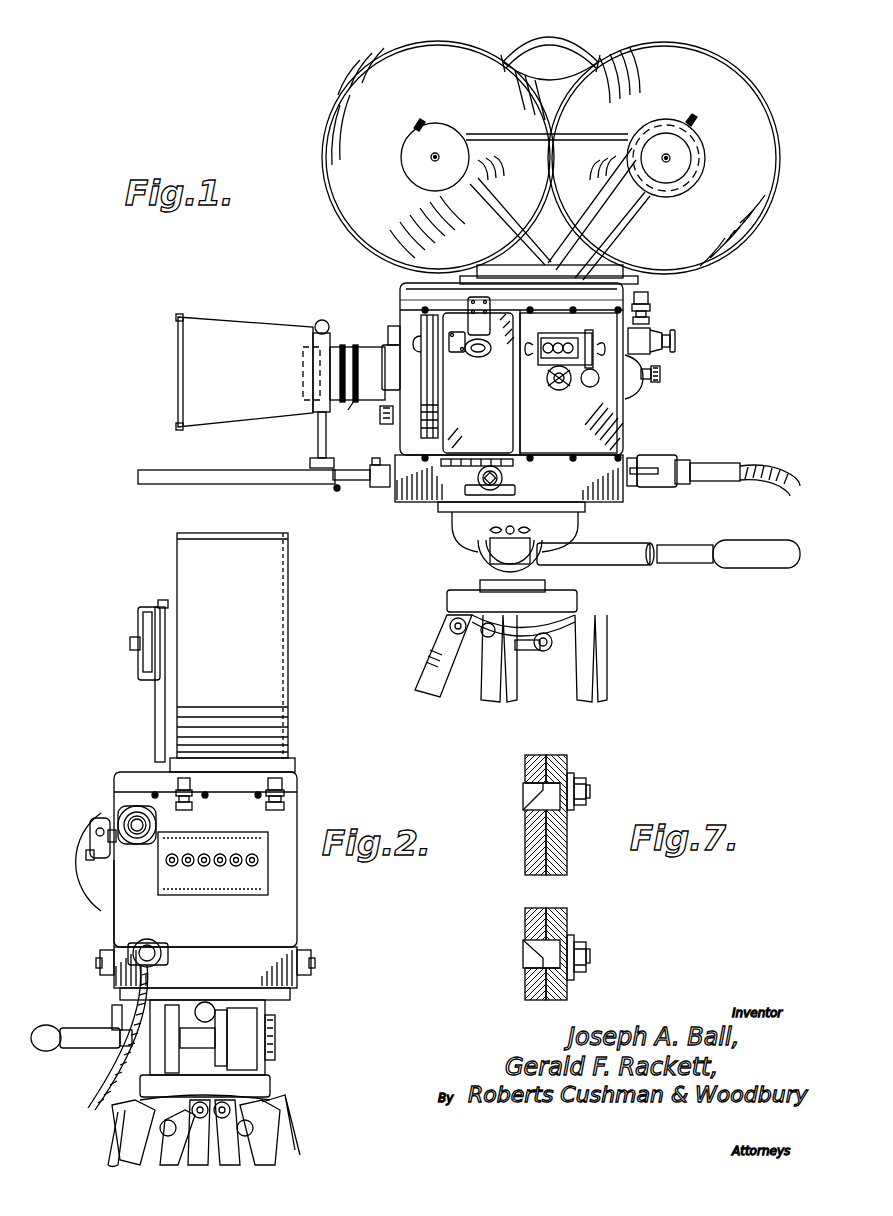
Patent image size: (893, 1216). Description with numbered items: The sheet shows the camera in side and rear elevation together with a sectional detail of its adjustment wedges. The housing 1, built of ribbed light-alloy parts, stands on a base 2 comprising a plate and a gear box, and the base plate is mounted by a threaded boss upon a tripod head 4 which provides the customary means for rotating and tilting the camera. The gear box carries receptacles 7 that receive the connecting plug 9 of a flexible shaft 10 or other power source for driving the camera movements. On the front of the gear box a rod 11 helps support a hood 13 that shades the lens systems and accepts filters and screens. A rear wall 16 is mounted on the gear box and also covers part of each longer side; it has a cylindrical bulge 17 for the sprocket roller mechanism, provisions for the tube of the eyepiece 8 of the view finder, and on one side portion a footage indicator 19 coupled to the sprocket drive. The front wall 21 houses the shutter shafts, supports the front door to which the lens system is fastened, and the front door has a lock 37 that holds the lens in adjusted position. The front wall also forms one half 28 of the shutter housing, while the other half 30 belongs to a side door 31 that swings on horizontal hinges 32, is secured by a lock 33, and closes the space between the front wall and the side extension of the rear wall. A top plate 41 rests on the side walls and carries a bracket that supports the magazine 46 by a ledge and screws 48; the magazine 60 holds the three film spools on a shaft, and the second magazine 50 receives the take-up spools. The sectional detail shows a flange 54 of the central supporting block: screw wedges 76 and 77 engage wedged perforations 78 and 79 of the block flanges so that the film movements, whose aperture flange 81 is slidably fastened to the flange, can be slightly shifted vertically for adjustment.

In FIG. 1, the housing 1 is at (518, 372).
In FIG. 2, the housing 1 is at (201, 846).
In FIG. 1, the base 2 is at (511, 492).
In FIG. 2, the base 2 is at (200, 967).
In FIG. 1, the tripod head 4 is at (475, 523).
In FIG. 2, the tripod head 4 is at (268, 992).
In FIG. 1, the receptacle 7 is at (502, 477).
In FIG. 2, the receptacle 7 is at (100, 962).
In FIG. 1, the eyepiece 8 is at (675, 345).
In FIG. 2, the eyepiece 8 is at (127, 810).
In FIG. 1, the connecting plug 9 is at (721, 468).
In FIG. 2, the connecting plug 9 is at (153, 940).
In FIG. 1, the flexible shaft 10 is at (770, 468).
In FIG. 2, the flexible shaft 10 is at (111, 1087).
In FIG. 1, the rod 11 is at (246, 472).
In FIG. 1, the hood 13 is at (214, 332).
In FIG. 1, the rear wall 16 is at (571, 382).
In FIG. 2, the rear wall 16 is at (273, 908).
In FIG. 1, the cylindrical bulge 17 is at (636, 384).
In FIG. 2, the cylindrical bulge 17 is at (194, 838).
In FIG. 1, the footage indicator 19 is at (565, 352).
In FIG. 2, the footage indicator 19 is at (92, 836).
In FIG. 1, the front wall 21 is at (400, 323).
In FIG. 1, the shutter housing half 28 is at (425, 366).
In FIG. 1, the shutter housing half 30 is at (438, 353).
In FIG. 2, the shutter housing half 30 is at (100, 893).
In FIG. 1, the side door 31 is at (478, 383).
In FIG. 1, the horizontal hinge 32 is at (470, 470).
In FIG. 1, the lock 33 is at (480, 350).
In FIG. 1, the lock 37 is at (380, 420).
In FIG. 1, the top plate 41 is at (408, 298).
In FIG. 2, the top plate 41 is at (290, 770).
In FIG. 1, the magazine 46 is at (555, 100).
In FIG. 1, the screw 48 is at (654, 318).
In FIG. 2, the screw 48 is at (285, 808).
In FIG. 1, the film magazine 50 is at (695, 67).
In FIG. 2, the film magazine 50 is at (212, 652).
In FIG. 7, the flange 54 is at (525, 840).
In FIG. 1, the magazine 60 is at (450, 63).
In FIG. 7, the screw wedge 76 is at (524, 795).
In FIG. 7, the screw wedge 77 is at (524, 951).
In FIG. 7, the wedged perforation 78 is at (530, 781).
In FIG. 7, the wedged perforation 79 is at (526, 969).
In FIG. 7, the aperture flange 81 is at (567, 768).